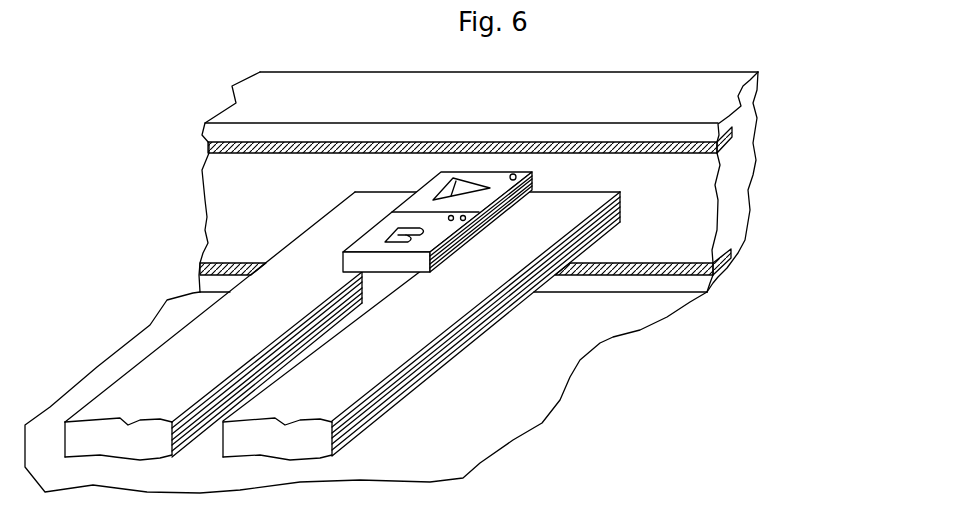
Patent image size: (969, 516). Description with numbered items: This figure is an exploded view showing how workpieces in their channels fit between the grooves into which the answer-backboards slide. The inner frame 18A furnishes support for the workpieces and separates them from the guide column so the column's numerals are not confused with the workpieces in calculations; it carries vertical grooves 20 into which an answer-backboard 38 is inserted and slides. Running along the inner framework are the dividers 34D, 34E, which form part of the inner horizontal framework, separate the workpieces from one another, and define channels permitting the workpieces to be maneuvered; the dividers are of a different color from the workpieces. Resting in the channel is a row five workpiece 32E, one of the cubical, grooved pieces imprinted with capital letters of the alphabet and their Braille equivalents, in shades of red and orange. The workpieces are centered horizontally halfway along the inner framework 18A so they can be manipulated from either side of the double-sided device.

The inner frame 18A is at (652, 82).
The vertical grooves 20 is at (685, 265).
The row five workpieces 32E is at (438, 188).
The divider 34E is at (357, 212).
The divider 34D is at (560, 208).
The answer-backboard 38 is at (513, 388).